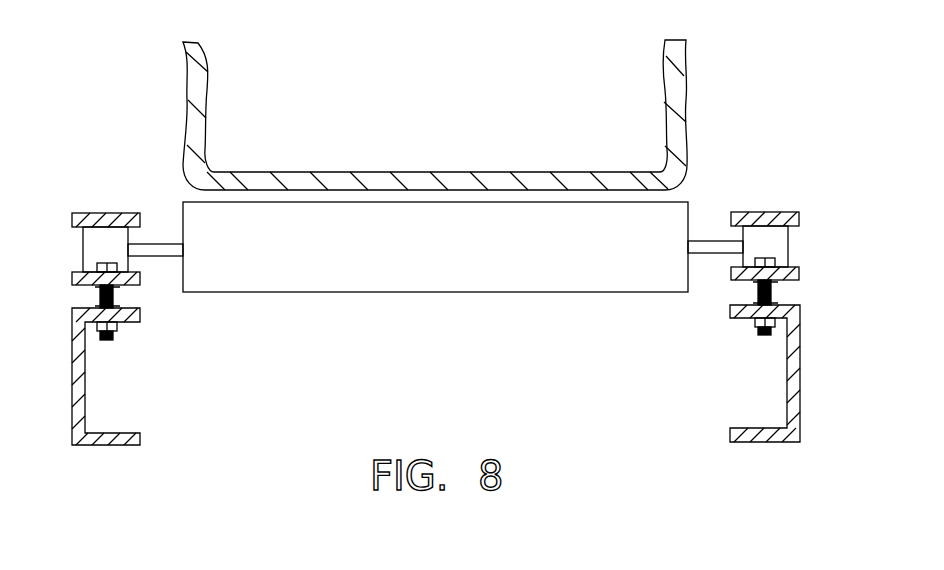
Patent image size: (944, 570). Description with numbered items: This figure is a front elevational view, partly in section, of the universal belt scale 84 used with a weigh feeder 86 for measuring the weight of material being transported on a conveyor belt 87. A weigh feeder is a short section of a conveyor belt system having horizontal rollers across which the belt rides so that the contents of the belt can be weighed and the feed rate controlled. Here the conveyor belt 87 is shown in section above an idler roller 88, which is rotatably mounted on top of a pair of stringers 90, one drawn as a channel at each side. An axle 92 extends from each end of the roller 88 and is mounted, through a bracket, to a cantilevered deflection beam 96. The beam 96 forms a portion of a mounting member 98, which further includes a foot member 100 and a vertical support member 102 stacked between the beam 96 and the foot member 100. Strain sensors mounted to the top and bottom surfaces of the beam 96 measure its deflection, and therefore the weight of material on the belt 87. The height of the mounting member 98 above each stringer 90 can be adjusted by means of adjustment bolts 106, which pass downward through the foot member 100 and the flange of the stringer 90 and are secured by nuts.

The universal belt scale 84 is at (178, 312).
The weigh feeder 86 is at (160, 118).
The conveyor belt 87 is at (443, 180).
The idler roller 88 is at (500, 273).
The stringers 90 is at (112, 445).
The axle 92 is at (708, 210).
The cantilevered deflection beam 96 is at (113, 222).
The mounting member 98 is at (433, 240).
The foot member 100 is at (77, 283).
The vertical support member 102 is at (93, 248).
The adjustment bolts 106 is at (117, 328).